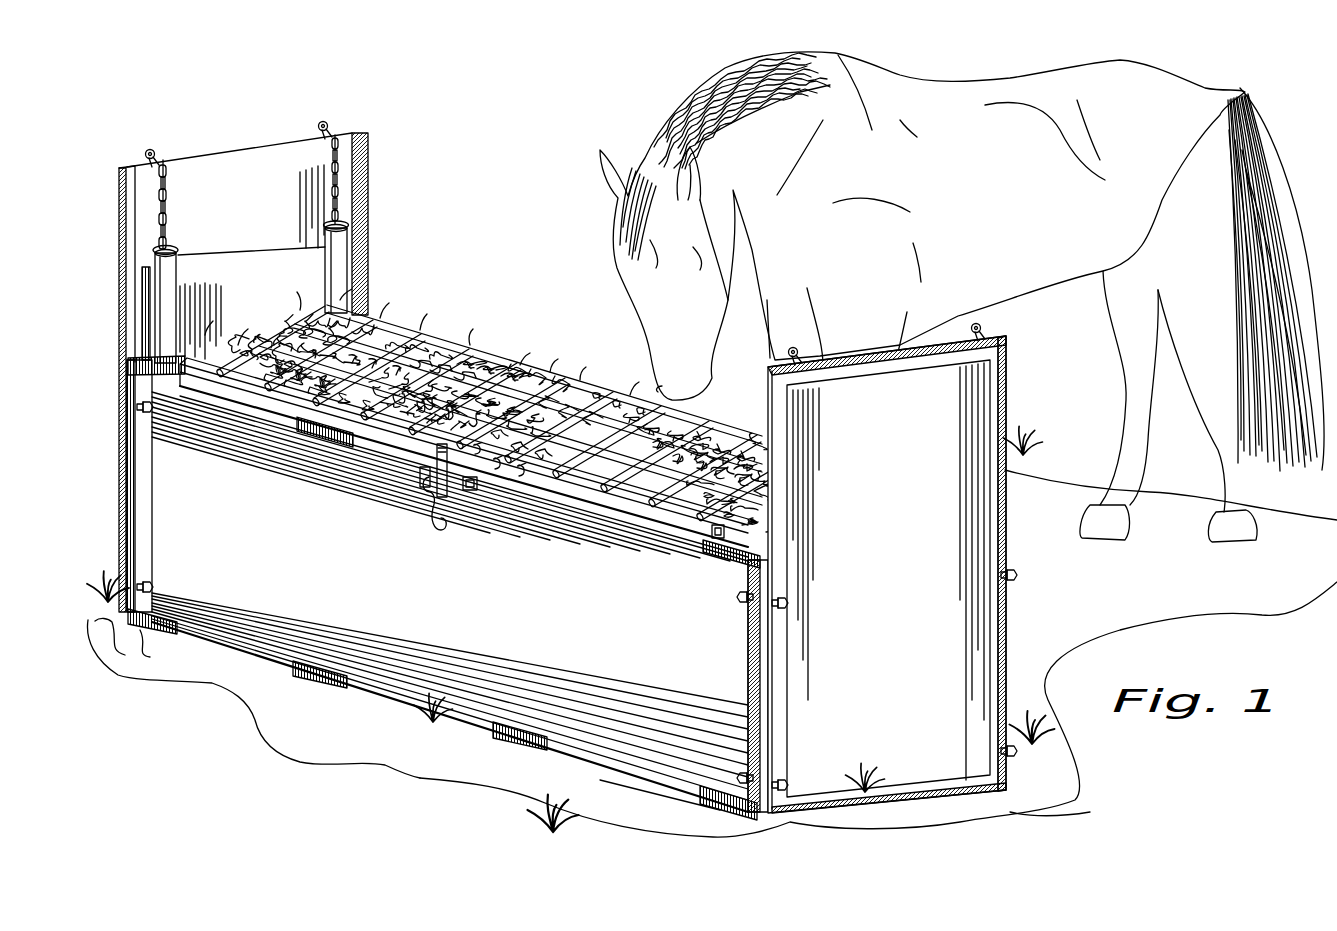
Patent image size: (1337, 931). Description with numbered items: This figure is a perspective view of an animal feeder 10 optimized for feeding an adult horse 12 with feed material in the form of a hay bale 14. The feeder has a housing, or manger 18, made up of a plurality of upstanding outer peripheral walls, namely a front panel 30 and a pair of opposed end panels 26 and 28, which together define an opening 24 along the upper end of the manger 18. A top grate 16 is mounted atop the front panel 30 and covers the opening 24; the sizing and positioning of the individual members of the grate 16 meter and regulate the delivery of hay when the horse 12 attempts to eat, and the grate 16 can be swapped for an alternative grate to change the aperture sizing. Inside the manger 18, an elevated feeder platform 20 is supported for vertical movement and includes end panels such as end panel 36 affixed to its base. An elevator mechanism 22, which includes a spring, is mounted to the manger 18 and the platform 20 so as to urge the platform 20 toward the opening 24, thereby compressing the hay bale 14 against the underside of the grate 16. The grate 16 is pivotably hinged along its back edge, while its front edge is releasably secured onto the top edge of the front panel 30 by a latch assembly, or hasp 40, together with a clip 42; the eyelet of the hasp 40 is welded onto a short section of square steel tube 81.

The animal feeder 10 is at (547, 428).
The horse 12 is at (975, 76).
The hay bale 14 is at (415, 414).
The top grate 16 is at (392, 303).
The manger 18 is at (240, 588).
The elevated feeder platform 20 is at (248, 282).
The elevator mechanism 22 is at (148, 258).
The opening 24 is at (233, 317).
The end panel 26 is at (119, 183).
The end panel 28 is at (870, 612).
The front panel 30 is at (574, 619).
The end panel 36 is at (197, 273).
The latch assembly, or hasp 40 is at (450, 528).
The clip 42 is at (427, 527).
The square steel tube 81 is at (447, 497).